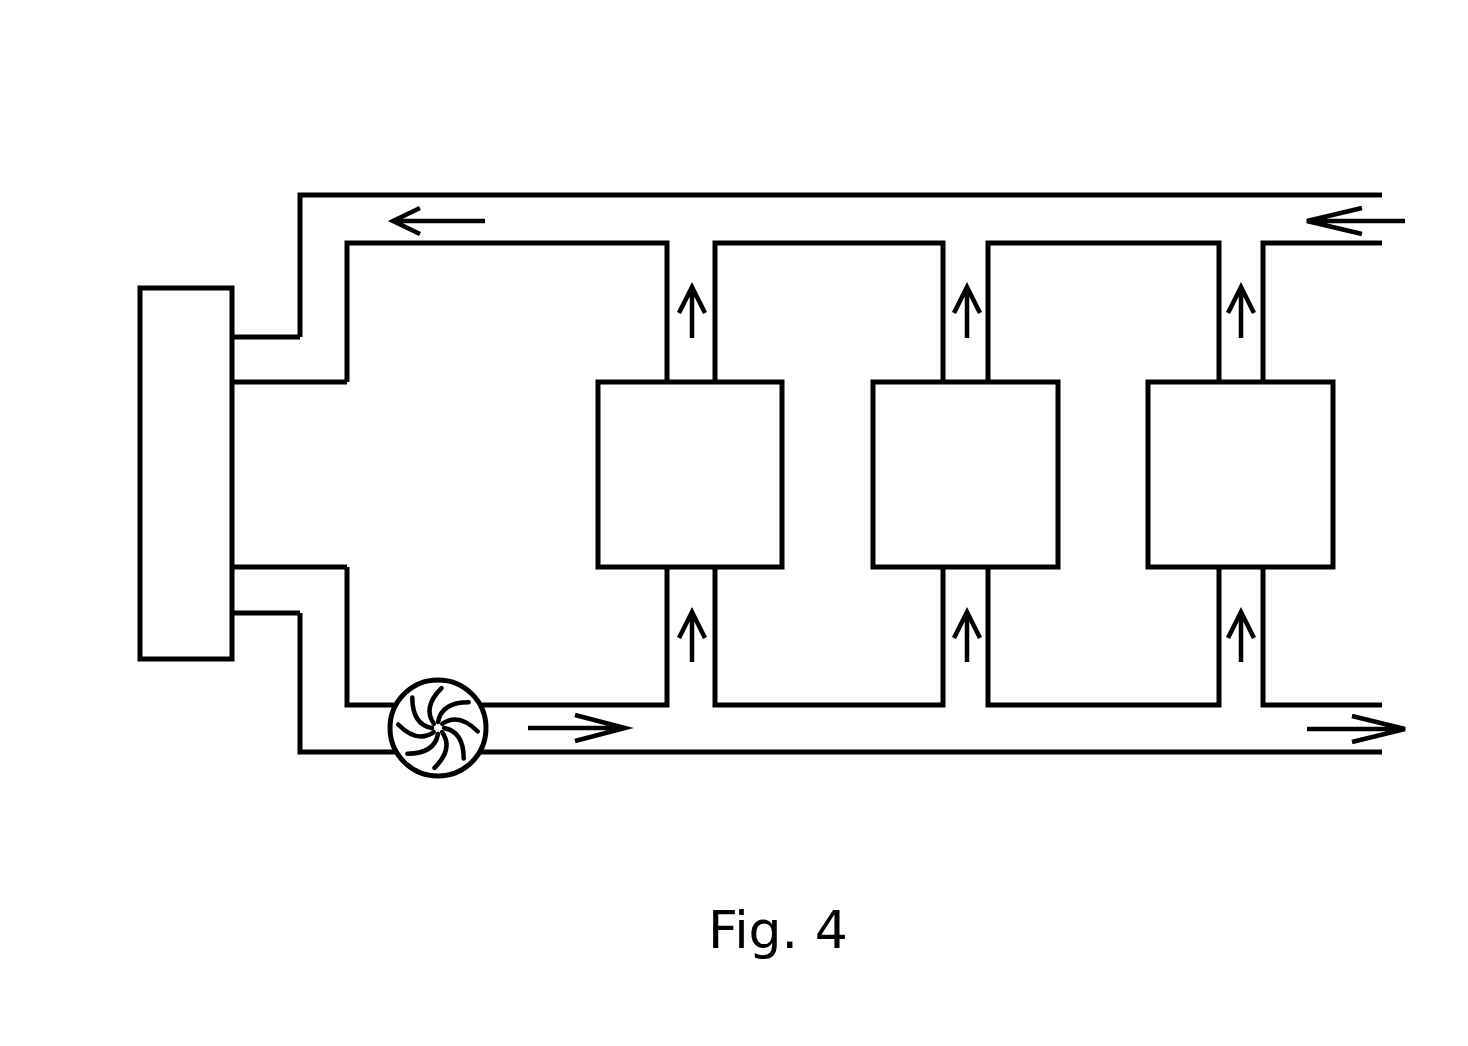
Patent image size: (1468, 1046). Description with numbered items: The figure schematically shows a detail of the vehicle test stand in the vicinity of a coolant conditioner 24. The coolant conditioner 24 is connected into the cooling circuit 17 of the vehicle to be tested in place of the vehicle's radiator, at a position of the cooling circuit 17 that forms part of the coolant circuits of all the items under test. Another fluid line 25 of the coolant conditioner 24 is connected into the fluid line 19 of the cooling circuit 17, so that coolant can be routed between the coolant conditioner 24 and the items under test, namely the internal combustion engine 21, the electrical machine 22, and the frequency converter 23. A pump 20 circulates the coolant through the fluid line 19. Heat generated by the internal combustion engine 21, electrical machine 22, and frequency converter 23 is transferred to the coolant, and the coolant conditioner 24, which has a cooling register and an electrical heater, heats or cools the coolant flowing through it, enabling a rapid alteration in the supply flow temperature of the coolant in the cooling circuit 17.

The cooling circuit 17 is at (1306, 113).
The fluid line 19 is at (792, 222).
The pump 20 is at (462, 760).
The internal combustion engine 21 is at (748, 532).
The electrical machine 22 is at (1023, 532).
The frequency converter 23 is at (1297, 532).
The coolant conditioner 24 is at (165, 625).
The another fluid line 25 is at (263, 362).